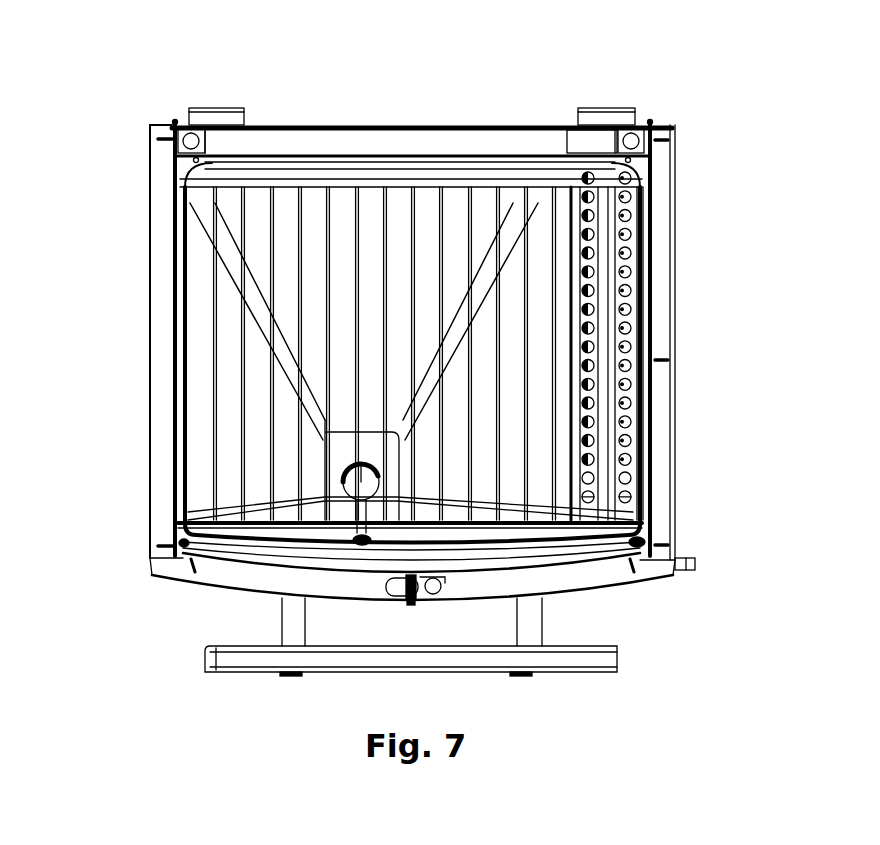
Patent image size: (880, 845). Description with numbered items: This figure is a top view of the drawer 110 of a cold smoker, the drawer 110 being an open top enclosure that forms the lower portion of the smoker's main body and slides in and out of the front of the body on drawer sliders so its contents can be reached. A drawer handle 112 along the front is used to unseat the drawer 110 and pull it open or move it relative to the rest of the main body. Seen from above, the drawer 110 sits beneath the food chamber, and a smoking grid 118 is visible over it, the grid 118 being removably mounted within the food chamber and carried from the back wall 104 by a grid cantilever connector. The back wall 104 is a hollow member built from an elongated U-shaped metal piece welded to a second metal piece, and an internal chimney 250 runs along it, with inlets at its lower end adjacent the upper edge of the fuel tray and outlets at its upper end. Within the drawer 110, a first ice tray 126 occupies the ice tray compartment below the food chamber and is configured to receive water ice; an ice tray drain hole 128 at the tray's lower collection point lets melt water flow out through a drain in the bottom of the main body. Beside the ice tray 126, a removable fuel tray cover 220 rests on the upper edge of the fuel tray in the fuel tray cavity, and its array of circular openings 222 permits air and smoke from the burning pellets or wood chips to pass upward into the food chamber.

The back wall 104 is at (437, 125).
The drawer 110 is at (150, 477).
The drawer handle 112 is at (244, 674).
The smoking grid 118 is at (304, 168).
The first ice tray 126 is at (228, 304).
The ice tray drain hole 128 is at (372, 480).
The fuel tray cover 220 is at (617, 225).
The circular openings 222 is at (628, 352).
The internal chimney 250 is at (593, 140).